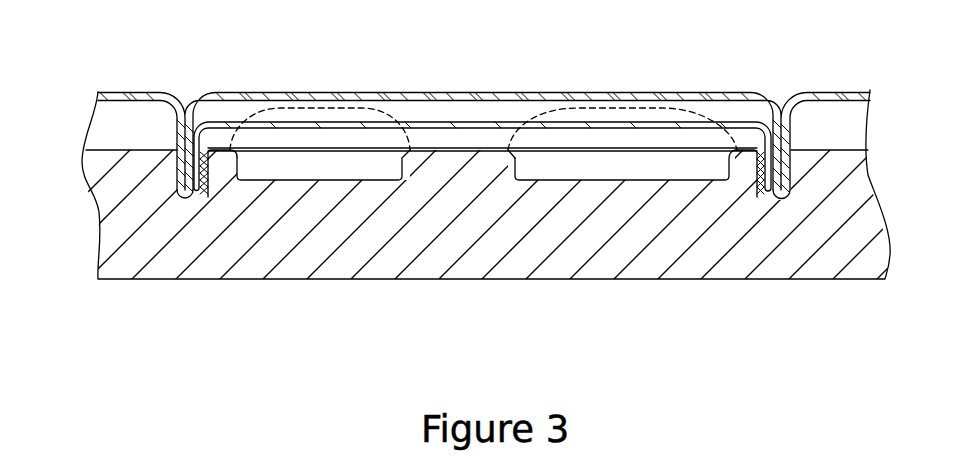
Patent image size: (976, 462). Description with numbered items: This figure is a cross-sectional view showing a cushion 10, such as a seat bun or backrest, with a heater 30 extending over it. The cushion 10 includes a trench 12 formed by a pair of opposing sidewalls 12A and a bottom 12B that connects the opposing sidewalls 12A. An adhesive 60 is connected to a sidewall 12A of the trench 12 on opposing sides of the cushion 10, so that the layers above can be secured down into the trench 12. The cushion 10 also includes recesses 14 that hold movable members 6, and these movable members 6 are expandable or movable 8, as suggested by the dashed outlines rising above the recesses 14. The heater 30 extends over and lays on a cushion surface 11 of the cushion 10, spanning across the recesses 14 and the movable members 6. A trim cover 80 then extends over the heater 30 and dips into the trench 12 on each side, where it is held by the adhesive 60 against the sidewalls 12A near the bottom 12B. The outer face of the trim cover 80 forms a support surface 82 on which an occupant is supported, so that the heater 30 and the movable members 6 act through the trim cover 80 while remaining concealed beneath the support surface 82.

The movable member 6 is at (687, 163).
The expandable or movable state 8 is at (283, 110).
The cushion 10 is at (850, 192).
The cushion surface 11 is at (450, 147).
The trench 12 is at (120, 85).
The sidewall 12A is at (190, 195).
The bottom 12B is at (187, 199).
The recess 14 is at (669, 191).
The heater 30 is at (527, 123).
The adhesive 60 is at (204, 170).
The trim cover 80 is at (508, 100).
The support surface 82 is at (352, 97).